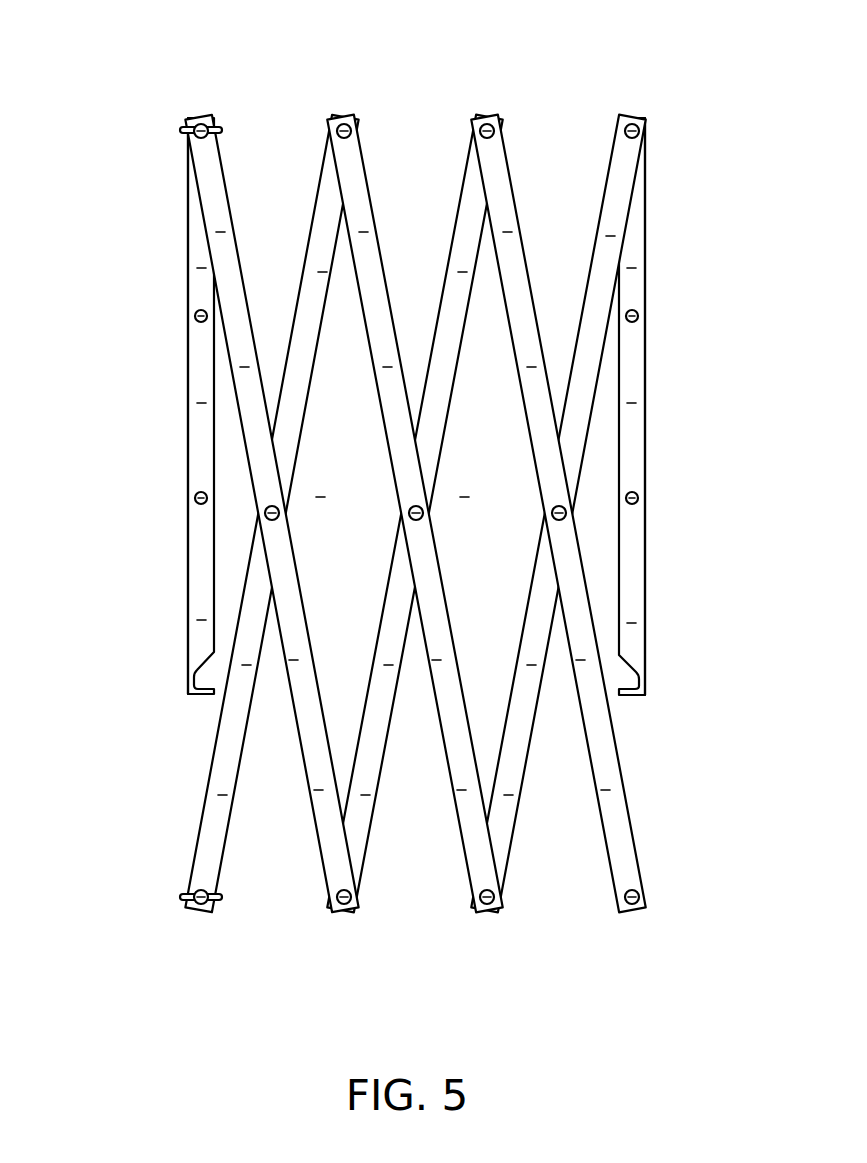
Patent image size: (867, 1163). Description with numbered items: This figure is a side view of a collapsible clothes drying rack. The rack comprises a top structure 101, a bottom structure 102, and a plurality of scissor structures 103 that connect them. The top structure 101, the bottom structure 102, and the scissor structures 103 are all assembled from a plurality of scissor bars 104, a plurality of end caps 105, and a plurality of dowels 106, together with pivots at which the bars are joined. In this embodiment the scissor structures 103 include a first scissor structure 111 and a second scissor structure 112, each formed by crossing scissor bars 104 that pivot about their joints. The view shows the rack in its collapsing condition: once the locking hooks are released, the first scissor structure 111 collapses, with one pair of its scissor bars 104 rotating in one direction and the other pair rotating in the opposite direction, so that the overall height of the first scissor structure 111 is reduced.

The top structure 101 is at (188, 435).
The bottom structure 102 is at (640, 498).
The plurality of scissor structures 103 is at (344, 117).
The plurality of scissor bars 104 is at (303, 413).
The plurality of end caps 105 is at (195, 364).
The plurality of dowels 106 is at (344, 911).
The first scissor structure 111 is at (323, 213).
The second scissor structure 112 is at (470, 238).